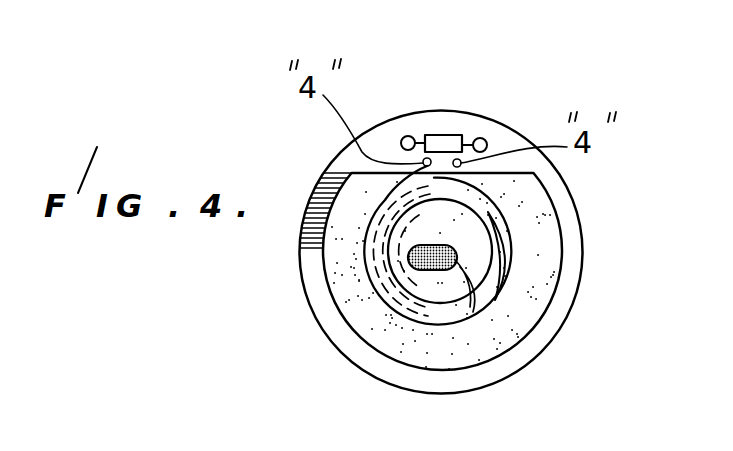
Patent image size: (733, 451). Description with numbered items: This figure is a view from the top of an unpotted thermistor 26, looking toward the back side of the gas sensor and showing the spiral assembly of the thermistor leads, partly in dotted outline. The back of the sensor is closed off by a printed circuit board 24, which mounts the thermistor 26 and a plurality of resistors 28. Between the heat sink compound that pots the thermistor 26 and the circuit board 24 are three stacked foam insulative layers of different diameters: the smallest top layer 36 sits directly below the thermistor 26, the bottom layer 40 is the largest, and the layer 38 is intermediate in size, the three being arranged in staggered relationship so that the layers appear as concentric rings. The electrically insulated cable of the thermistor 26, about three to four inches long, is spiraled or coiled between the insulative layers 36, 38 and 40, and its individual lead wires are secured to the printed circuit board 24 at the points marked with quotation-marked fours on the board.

The printed circuit board 24 is at (352, 174).
The thermistor 26 is at (442, 272).
The resistors 28 is at (445, 133).
The top insulative layer 36 is at (470, 233).
The intermediate insulative layer 38 is at (490, 297).
The bottom insulative layer 40 is at (344, 292).